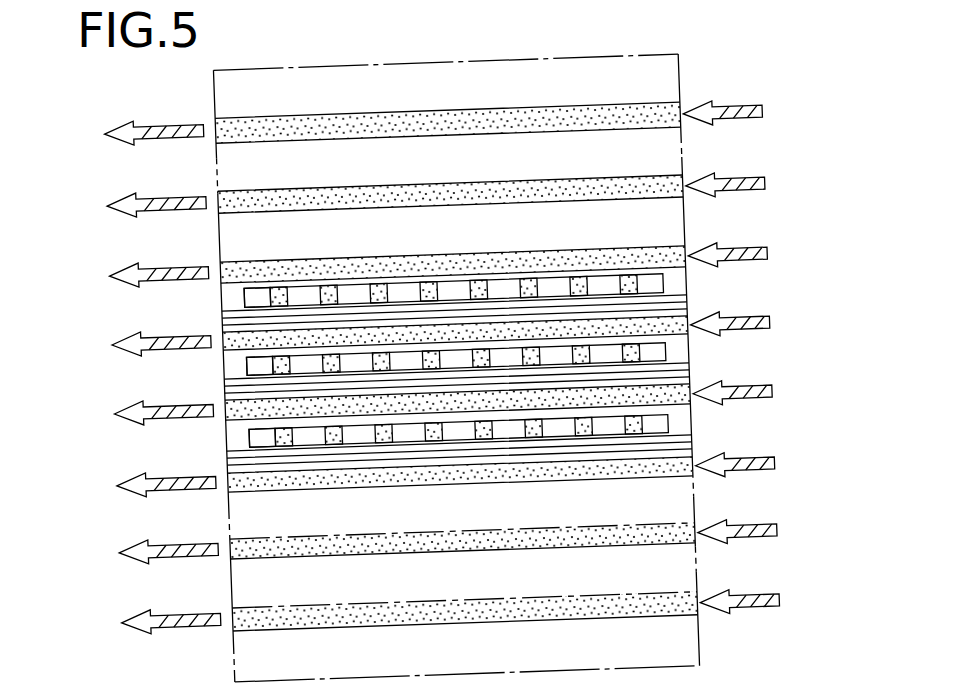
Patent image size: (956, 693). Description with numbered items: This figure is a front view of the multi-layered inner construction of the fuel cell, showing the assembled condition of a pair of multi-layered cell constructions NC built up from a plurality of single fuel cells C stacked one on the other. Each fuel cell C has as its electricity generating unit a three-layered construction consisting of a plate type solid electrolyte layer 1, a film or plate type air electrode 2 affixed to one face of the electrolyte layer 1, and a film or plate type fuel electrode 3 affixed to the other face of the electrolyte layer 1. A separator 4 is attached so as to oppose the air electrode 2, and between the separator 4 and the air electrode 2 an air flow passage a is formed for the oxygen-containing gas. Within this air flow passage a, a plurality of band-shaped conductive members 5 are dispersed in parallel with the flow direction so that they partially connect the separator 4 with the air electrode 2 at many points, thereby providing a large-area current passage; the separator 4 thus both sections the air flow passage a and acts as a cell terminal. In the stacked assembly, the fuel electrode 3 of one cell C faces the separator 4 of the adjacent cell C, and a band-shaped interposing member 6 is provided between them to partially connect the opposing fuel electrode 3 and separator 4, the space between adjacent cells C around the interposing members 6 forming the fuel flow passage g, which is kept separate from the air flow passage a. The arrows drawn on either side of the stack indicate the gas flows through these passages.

The solid electrolyte layer 1 is at (222, 318).
The air electrode 2 is at (257, 293).
The fuel electrode 3 is at (220, 327).
The separator 4 is at (382, 273).
The band-shaped conductive member 5 is at (342, 295).
The band-shaped interposing member 6 is at (626, 115).
The air flow passage a is at (307, 296).
The fuel cell C is at (682, 78).
The multi-layered cell construction NC is at (777, 73).
The fuel flow passage g is at (443, 367).